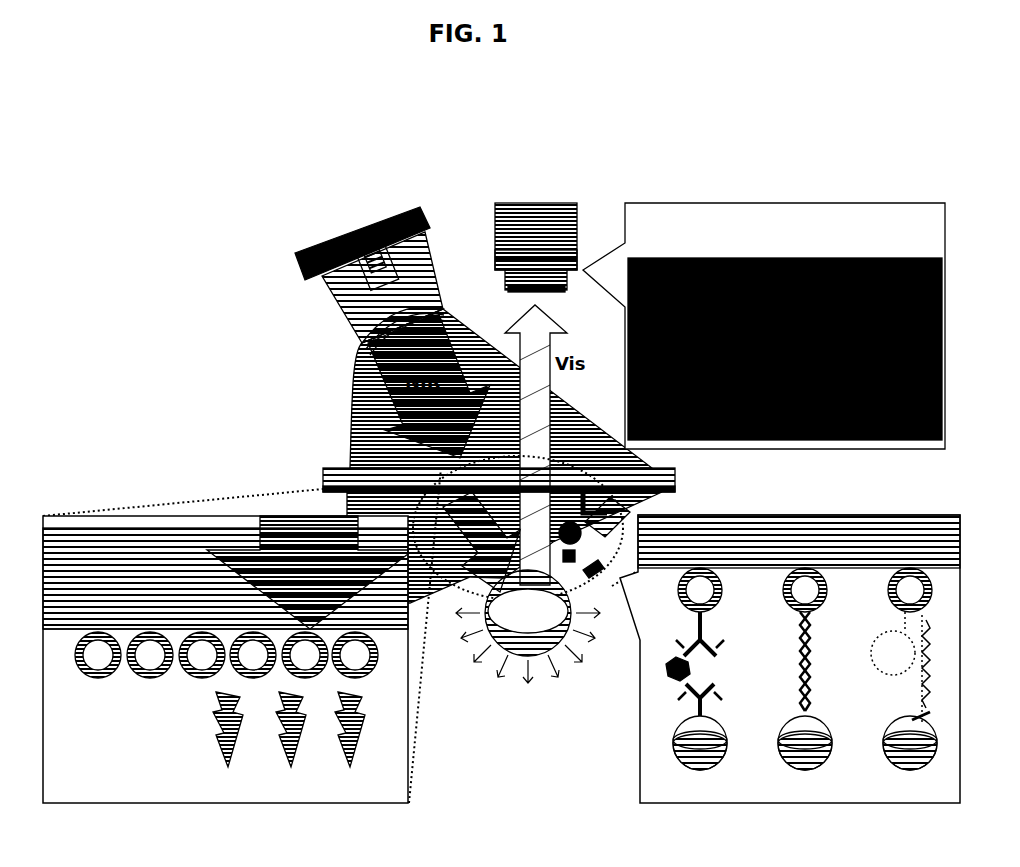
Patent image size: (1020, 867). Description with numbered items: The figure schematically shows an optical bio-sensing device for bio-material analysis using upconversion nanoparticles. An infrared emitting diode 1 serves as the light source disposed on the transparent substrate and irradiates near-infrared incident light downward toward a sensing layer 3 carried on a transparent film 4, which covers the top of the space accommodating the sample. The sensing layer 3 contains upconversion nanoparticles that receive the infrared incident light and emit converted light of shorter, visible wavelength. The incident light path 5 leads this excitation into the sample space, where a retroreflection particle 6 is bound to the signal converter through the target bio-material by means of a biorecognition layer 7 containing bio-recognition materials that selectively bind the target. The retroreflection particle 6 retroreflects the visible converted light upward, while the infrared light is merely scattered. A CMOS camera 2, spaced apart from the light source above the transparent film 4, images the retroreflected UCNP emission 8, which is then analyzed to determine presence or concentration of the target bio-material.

The infrared emitting diode 1 is at (280, 267).
The CMOS camera 2 is at (550, 226).
The sensing layer 3 is at (359, 623).
The transparent film 4 is at (225, 659).
The incident light path 5 is at (481, 542).
The retroreflection particle 6 is at (531, 643).
The biorecognition layer 7 is at (790, 659).
The retroreflected UCNP emission 8 is at (764, 326).